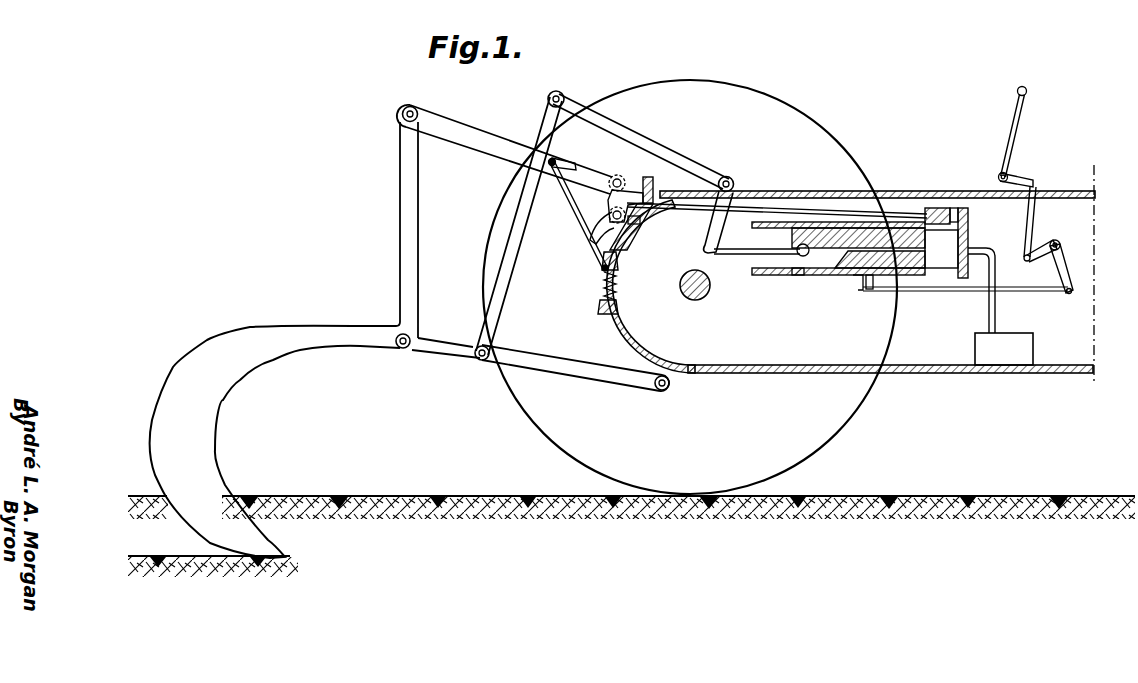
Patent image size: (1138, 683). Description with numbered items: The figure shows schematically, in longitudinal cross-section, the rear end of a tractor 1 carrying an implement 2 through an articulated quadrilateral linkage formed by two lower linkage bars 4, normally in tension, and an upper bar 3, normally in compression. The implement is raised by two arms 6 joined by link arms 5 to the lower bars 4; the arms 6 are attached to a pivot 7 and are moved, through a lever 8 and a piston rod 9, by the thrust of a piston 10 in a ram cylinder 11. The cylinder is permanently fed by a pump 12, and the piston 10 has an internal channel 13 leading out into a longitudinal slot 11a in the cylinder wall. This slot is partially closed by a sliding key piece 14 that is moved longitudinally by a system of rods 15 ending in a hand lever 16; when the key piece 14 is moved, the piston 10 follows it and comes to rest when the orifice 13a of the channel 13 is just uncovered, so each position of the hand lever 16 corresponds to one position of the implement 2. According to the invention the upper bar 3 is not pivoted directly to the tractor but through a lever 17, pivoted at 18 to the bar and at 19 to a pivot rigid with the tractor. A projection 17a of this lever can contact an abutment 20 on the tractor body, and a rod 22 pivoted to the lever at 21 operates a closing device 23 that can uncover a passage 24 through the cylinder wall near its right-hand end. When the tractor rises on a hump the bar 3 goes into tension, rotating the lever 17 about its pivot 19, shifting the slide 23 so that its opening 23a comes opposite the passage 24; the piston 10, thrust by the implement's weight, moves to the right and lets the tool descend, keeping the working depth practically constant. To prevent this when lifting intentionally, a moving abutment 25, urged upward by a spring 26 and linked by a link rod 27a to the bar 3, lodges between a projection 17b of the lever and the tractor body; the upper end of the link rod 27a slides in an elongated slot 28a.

The tractor 1 is at (942, 368).
The implement 2 is at (247, 332).
The upper bar 3 is at (477, 129).
The lower linkage bars 4 is at (540, 362).
The link arms 5 is at (500, 261).
The arms 6 is at (562, 100).
The pivot 7 is at (730, 182).
The lever 8 is at (718, 230).
The piston rod 9 is at (746, 263).
The piston 10 is at (843, 231).
The ram cylinder 11 is at (962, 278).
The longitudinal slot 11a is at (810, 277).
The pump 12 is at (1018, 352).
The internal channel 13 is at (908, 290).
The orifice 13a is at (852, 269).
The sliding key piece 14 is at (870, 288).
The system of rods 15 is at (1032, 218).
The hand lever 16 is at (1027, 93).
The lever 17 is at (622, 174).
The projection 17a is at (640, 186).
The projection 17b is at (588, 244).
The pivot 18 is at (642, 194).
The pivot 19 is at (625, 238).
The abutment 20 is at (656, 187).
The pivot 21 is at (638, 224).
The rod 22 is at (791, 206).
The closing device 23 is at (936, 208).
The opening 23a is at (975, 222).
The passage 24 is at (963, 236).
The moving abutment 25 is at (614, 278).
The spring 26 is at (598, 303).
The link rod 27a is at (586, 238).
The elongated slot 28a is at (555, 168).